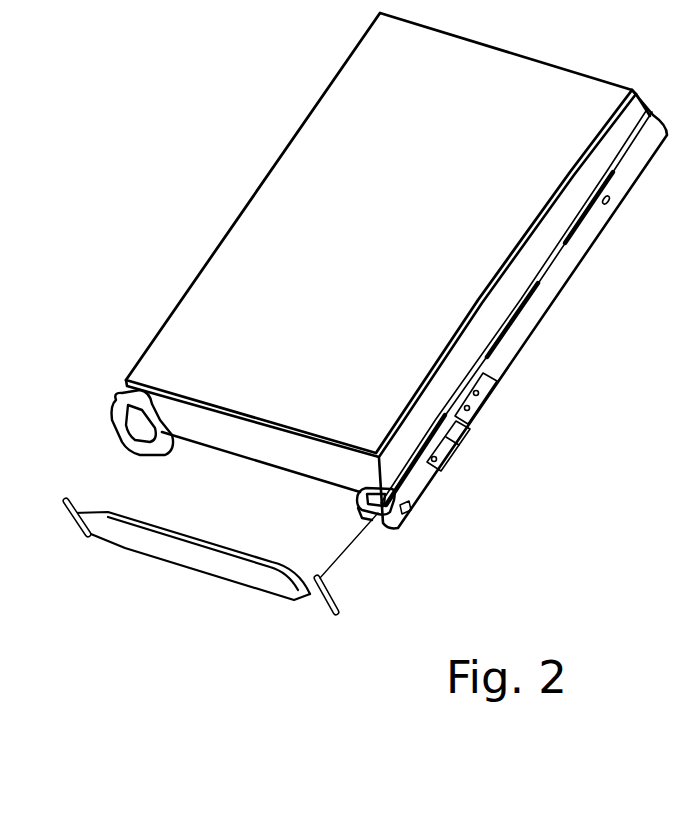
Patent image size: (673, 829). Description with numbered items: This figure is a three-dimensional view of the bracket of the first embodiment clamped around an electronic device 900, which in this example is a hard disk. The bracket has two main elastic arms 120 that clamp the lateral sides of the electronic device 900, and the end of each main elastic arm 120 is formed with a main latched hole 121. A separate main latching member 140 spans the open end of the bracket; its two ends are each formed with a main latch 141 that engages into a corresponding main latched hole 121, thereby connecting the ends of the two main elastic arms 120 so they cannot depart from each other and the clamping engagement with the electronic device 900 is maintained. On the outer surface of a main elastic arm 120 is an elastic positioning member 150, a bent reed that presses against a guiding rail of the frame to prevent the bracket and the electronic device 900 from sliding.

The electronic device 900 is at (325, 162).
The main elastic arm 120 is at (558, 271).
The elastic positioning member 150 is at (458, 443).
The main latched hole 121 is at (73, 513).
The main latching member 140 is at (178, 555).
The main latch 141 is at (72, 515).